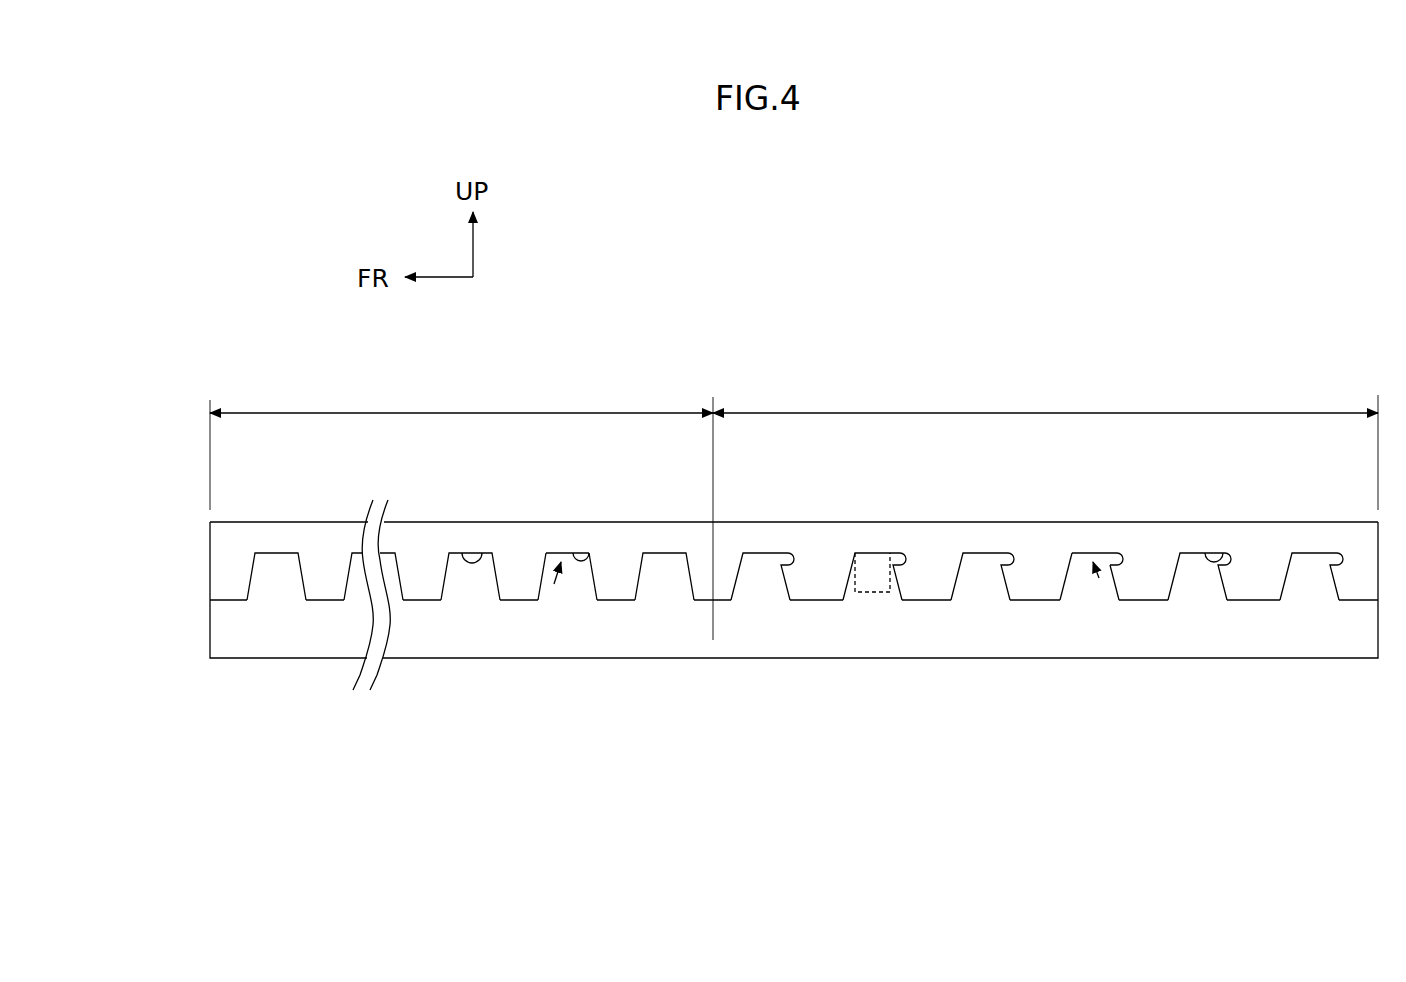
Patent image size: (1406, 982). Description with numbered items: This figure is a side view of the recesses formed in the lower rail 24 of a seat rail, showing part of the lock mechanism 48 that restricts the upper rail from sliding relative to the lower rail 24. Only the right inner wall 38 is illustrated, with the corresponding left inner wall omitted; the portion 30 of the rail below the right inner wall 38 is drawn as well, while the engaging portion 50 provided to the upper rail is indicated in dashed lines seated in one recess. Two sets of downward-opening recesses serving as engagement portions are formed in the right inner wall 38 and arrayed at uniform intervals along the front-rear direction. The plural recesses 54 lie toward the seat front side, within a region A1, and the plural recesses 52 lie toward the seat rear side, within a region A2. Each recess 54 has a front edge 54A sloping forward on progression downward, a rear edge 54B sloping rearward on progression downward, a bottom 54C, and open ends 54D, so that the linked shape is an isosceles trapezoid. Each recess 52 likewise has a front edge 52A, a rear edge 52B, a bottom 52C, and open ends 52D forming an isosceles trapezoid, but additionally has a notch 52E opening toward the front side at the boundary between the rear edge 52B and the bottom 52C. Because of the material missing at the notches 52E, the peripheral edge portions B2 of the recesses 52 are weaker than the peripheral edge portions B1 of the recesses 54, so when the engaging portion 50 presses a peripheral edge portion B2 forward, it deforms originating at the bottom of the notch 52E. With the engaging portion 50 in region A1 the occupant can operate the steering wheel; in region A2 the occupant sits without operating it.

The lower rail 24 is at (150, 618).
The base portion 30 is at (228, 640).
The right inner wall 38 is at (225, 572).
The lock mechanism 48 is at (900, 368).
The engaging portion 50 is at (882, 593).
The recess 52 is at (1037, 591).
The front edge 52A is at (1063, 583).
The rear edge 52B is at (1113, 583).
The bottom 52C is at (1078, 552).
The open end 52D is at (1060, 600).
The notch 52E is at (1113, 548).
The recess 54 is at (483, 617).
The front edge 54A is at (543, 573).
The rear edge 54B is at (594, 585).
The bottom 54C is at (592, 553).
The open end 54D is at (543, 590).
The region A1 is at (415, 413).
The region A2 is at (1010, 413).
The peripheral edge portion B1 is at (327, 587).
The peripheral edge portion B2 is at (930, 583).